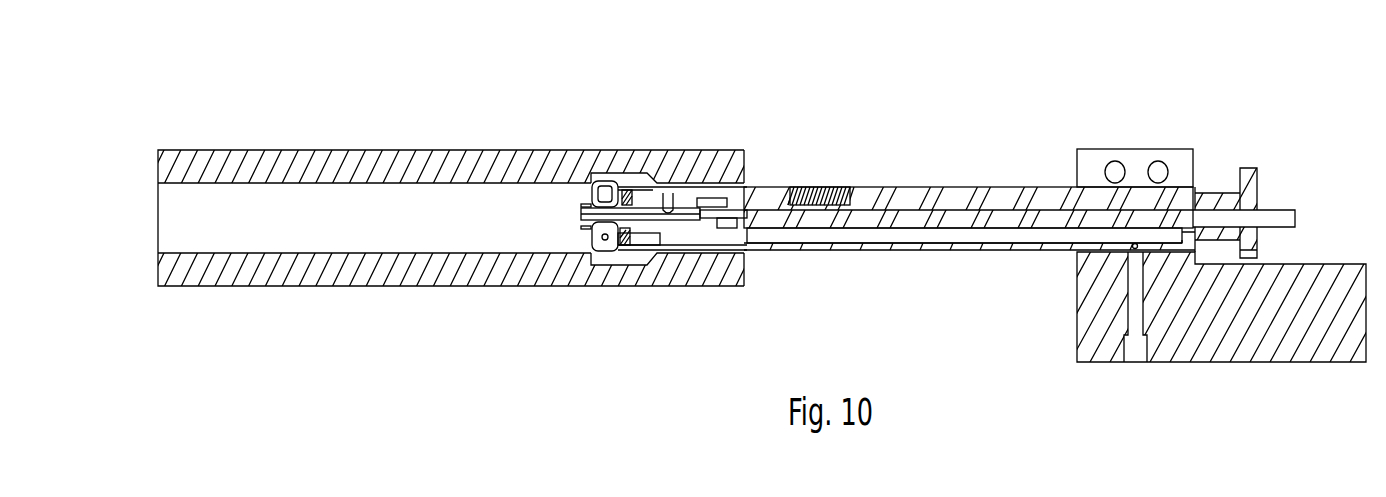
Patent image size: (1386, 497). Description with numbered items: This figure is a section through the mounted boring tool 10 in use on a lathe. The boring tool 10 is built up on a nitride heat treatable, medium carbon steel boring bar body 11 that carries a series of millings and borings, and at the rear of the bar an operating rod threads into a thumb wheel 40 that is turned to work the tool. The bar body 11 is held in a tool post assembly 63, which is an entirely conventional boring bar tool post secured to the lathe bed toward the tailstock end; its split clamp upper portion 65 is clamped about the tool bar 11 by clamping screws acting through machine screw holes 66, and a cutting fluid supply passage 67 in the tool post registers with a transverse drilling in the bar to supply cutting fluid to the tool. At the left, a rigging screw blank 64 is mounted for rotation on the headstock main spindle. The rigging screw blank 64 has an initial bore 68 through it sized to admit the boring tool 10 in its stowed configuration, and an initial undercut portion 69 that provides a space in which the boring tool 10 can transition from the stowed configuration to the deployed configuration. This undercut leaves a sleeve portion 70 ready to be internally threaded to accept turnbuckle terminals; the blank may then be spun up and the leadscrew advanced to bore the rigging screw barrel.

The boring tool 10 is at (903, 118).
The boring bar body 11 is at (1007, 195).
The thumb wheel 40 is at (1252, 181).
The tool post assembly 63 is at (1256, 332).
The rigging screw blank 64 is at (350, 272).
The split clamp upper portion 65 is at (1085, 148).
The machine screw holes 66 is at (1115, 162).
The cutting fluid supply passage 67 is at (1132, 312).
The initial bore 68 is at (274, 183).
The initial undercut portion 69 is at (622, 255).
The sleeve portion 70 is at (691, 168).